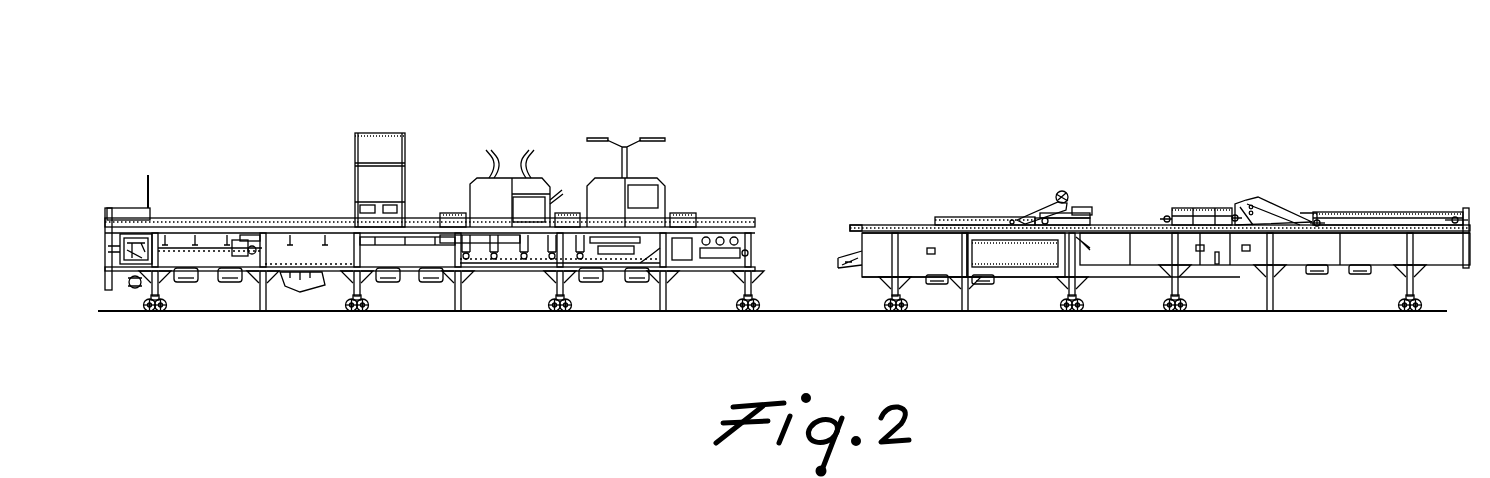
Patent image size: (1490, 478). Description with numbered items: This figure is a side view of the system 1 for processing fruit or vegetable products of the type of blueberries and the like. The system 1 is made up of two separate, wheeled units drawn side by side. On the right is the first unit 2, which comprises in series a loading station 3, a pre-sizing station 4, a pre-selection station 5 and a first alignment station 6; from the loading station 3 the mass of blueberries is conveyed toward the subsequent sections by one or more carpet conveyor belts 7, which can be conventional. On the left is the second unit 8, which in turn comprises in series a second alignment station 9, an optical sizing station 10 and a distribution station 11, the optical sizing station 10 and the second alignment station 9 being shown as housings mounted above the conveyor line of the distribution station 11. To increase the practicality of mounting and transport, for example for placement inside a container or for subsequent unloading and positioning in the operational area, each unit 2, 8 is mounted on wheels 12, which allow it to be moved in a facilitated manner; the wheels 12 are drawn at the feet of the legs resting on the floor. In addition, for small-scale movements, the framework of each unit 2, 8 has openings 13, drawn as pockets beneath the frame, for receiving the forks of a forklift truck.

The system 1 is at (892, 126).
The first unit 2 is at (1278, 192).
The loading station 3 is at (1414, 203).
The pre-sizing station 4 is at (1214, 198).
The pre-selection station 5 is at (1095, 206).
The first alignment station 6 is at (1003, 206).
The carpet conveyor belts 7 is at (1133, 224).
The second unit 8 is at (446, 116).
The second alignment station 9 is at (722, 206).
The optical sizing station 10 is at (528, 136).
The distribution station 11 is at (304, 210).
The wheels 12 is at (150, 312).
The openings 13 is at (186, 282).